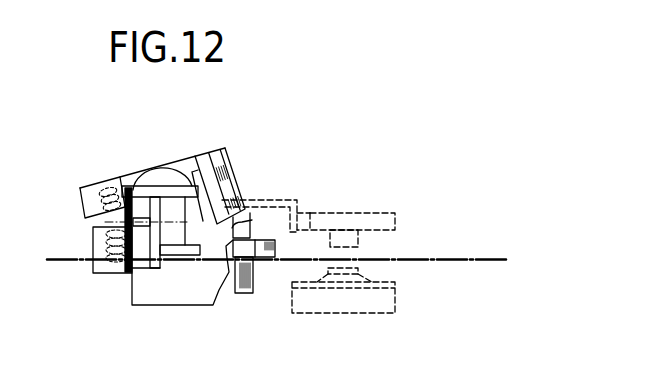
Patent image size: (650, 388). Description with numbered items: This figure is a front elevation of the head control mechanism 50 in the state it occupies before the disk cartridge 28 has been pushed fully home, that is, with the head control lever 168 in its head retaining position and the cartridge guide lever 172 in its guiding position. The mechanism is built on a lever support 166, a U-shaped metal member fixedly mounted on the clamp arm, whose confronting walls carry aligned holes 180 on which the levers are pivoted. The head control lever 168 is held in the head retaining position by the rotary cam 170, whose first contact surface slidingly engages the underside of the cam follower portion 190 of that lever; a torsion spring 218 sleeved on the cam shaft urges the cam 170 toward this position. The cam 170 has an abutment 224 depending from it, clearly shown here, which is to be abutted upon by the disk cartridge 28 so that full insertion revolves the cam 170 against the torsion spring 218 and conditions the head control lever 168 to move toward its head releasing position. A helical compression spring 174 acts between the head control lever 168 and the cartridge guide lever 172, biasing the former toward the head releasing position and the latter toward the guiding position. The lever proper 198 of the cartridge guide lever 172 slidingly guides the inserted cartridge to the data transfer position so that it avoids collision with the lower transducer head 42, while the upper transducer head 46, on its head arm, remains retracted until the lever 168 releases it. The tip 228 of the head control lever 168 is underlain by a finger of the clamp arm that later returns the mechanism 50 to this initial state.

The flexible magnetic disk cartridge 28 is at (462, 259).
The lower magnetic transducer head 42 is at (358, 270).
The upper magnetic transducer head 46 is at (358, 240).
The head control mechanism 50 is at (246, 144).
The lever support 166 is at (147, 310).
The head control lever 168 is at (210, 142).
The rotary cam 170 is at (186, 262).
The cartridge guide lever 172 is at (244, 304).
The helical compression spring 174 is at (105, 225).
The aligned holes 180 is at (254, 200).
The cam follower portion 190 is at (196, 177).
The lever proper 198 is at (250, 282).
The torsion spring 218 is at (140, 215).
The abutment 224 is at (150, 271).
The tip 228 is at (276, 251).